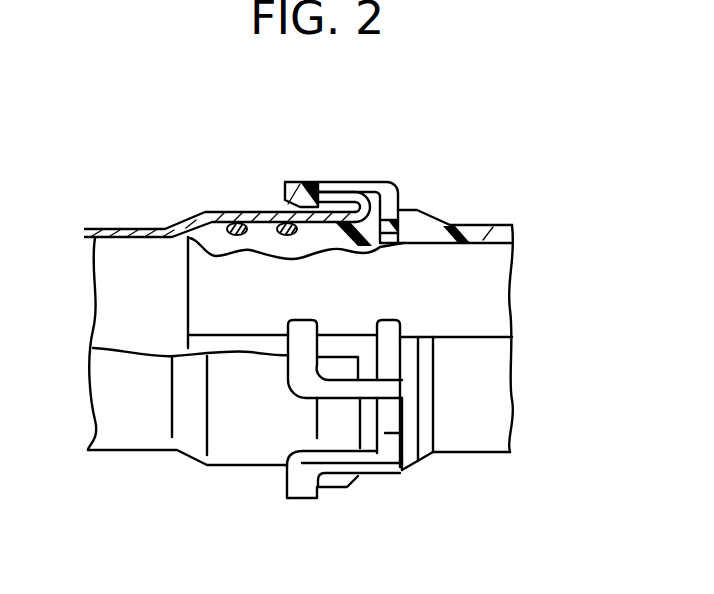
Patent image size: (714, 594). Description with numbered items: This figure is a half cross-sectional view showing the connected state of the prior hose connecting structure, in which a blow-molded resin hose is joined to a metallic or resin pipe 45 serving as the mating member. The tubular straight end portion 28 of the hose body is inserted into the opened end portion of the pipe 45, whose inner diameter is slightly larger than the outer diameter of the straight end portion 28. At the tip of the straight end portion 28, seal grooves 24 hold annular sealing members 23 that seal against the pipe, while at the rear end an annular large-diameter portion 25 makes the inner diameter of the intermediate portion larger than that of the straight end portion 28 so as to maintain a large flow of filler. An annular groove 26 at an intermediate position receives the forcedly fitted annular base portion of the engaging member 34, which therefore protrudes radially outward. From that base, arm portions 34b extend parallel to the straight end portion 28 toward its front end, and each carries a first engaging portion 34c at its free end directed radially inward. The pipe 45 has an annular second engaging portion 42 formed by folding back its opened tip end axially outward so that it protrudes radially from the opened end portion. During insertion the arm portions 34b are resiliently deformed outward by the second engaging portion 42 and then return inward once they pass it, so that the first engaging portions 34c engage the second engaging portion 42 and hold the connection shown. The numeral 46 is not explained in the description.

The annular sealing member 23 is at (228, 211).
The seal groove 24 is at (277, 240).
The annular large-diameter portion 25 is at (413, 228).
The annular groove 26 is at (385, 216).
The straight end portion 28 is at (488, 233).
The engaging member 34 is at (414, 512).
The arm portion 34b is at (353, 188).
The first engaging portion 34c is at (300, 183).
The annular second engaging portion 42 is at (332, 185).
The pipe 45 is at (163, 172).
The inner pipe 46 is at (243, 453).